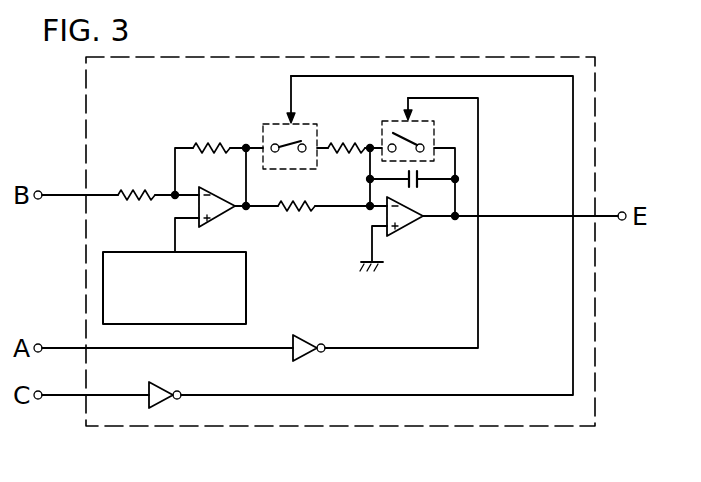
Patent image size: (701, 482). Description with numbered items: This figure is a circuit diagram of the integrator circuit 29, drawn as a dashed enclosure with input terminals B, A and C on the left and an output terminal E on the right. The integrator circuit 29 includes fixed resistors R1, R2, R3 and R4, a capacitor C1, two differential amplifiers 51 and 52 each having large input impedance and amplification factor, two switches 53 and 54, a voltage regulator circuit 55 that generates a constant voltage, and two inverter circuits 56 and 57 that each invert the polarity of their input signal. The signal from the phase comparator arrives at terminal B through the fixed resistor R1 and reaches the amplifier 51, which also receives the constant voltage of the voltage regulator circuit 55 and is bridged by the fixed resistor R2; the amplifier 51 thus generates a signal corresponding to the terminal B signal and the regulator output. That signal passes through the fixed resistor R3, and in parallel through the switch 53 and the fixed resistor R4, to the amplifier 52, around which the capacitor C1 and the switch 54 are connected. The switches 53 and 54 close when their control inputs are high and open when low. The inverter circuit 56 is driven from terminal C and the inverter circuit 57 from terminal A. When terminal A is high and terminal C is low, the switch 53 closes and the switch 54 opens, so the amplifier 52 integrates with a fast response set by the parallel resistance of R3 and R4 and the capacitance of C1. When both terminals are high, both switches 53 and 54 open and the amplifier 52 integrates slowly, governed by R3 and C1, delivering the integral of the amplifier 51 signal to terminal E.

The integrator circuit 29 is at (248, 60).
The differential amplifier 51 is at (225, 212).
The differential amplifier 52 is at (405, 228).
The switch 53 is at (267, 128).
The switch 54 is at (397, 124).
The voltage regulator circuit 55 is at (247, 291).
The inverter circuit 56 is at (165, 373).
The inverter circuit 57 is at (301, 334).
The fixed resistor R1 is at (136, 181).
The fixed resistor R2 is at (211, 135).
The fixed resistor R3 is at (296, 222).
The fixed resistor R4 is at (346, 134).
The capacitor C1 is at (414, 191).